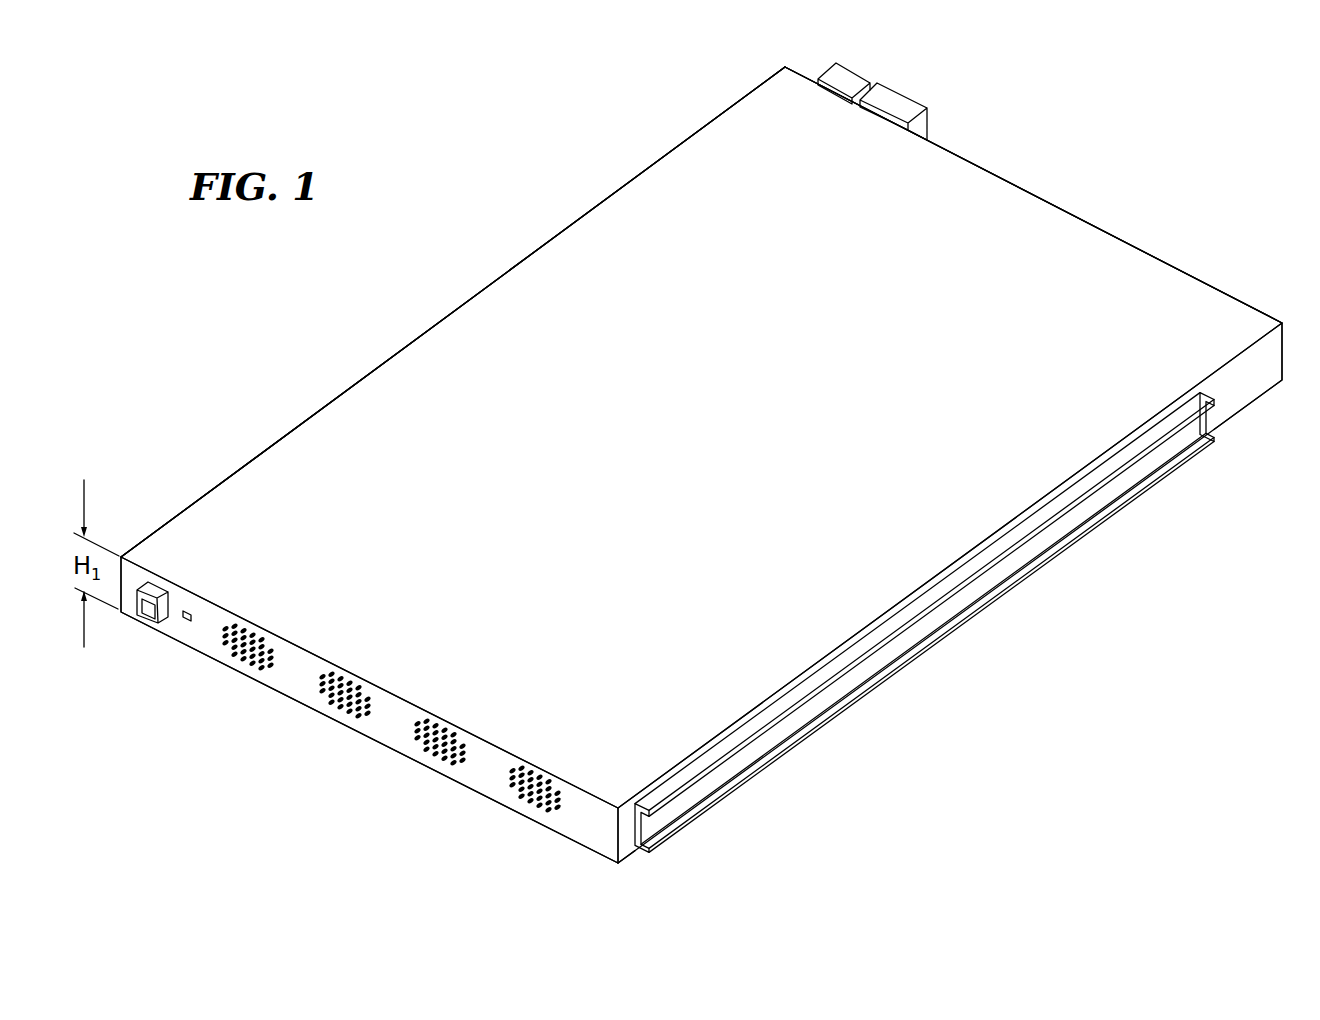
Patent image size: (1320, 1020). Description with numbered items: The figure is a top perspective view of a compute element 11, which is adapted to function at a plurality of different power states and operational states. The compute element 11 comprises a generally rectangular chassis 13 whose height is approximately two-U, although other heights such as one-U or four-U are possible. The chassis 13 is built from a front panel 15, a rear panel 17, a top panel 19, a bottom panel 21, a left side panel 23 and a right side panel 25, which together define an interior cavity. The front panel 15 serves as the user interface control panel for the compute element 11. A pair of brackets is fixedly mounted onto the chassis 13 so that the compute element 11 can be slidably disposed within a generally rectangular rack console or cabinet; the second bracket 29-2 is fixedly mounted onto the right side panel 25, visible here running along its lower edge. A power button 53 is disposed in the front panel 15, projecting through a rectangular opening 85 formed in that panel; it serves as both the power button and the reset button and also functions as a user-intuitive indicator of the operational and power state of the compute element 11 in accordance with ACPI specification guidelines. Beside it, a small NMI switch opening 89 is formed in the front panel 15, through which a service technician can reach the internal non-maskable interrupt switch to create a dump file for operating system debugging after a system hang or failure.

The compute element 11 is at (1078, 603).
The chassis 13 is at (545, 235).
The front panel 15 is at (396, 735).
The rear panel 17 is at (1071, 213).
The top panel 19 is at (633, 197).
The bottom panel 21 is at (586, 845).
The left side panel 23 is at (286, 437).
The right side panel 25 is at (1261, 373).
The second bracket 29-2 is at (905, 633).
The power button 53 is at (154, 580).
The rectangular opening 85 is at (150, 623).
The NMI switch opening 89 is at (187, 628).